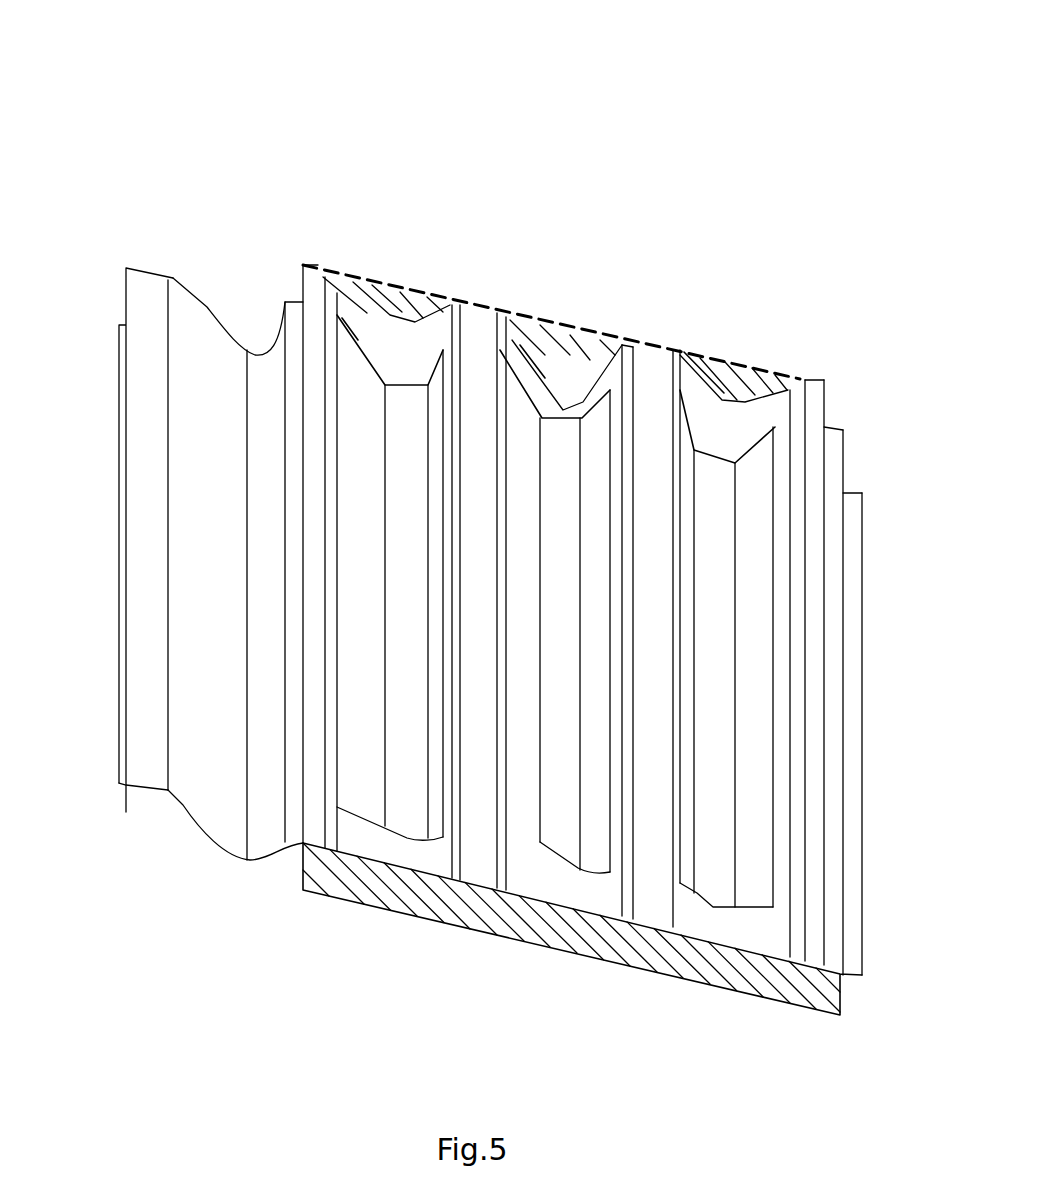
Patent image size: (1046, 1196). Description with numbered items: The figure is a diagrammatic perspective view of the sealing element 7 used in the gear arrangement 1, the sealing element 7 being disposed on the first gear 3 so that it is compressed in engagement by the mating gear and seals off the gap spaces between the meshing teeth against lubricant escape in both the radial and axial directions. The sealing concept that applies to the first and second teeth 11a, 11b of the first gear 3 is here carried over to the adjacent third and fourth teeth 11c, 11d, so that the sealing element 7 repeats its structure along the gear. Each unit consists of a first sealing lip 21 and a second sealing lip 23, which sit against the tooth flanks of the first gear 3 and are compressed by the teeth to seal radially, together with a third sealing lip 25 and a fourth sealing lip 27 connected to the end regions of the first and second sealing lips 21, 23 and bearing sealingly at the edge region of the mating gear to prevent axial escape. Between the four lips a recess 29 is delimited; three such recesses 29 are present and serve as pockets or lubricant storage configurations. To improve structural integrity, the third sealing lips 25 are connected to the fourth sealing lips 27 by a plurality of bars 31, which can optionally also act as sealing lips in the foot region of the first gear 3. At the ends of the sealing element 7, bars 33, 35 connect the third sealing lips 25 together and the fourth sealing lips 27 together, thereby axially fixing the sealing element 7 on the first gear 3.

The gear arrangement 1 is at (177, 153).
The first gear 3 is at (130, 528).
The sealing element 7 is at (292, 812).
The first tooth of the first gear 11a is at (600, 430).
The second tooth of the first gear 11b is at (517, 440).
The third tooth of the first gear 11c is at (758, 482).
The fourth tooth of the first gear 11d is at (348, 373).
The first sealing lip 21 is at (489, 418).
The second sealing lip 23 is at (632, 442).
The third sealing lip 25 is at (385, 307).
The fourth sealing lip 27 is at (397, 852).
The recess 29 is at (367, 708).
The bar 31 is at (398, 457).
The bar 33 is at (745, 405).
The bar 35 is at (700, 968).